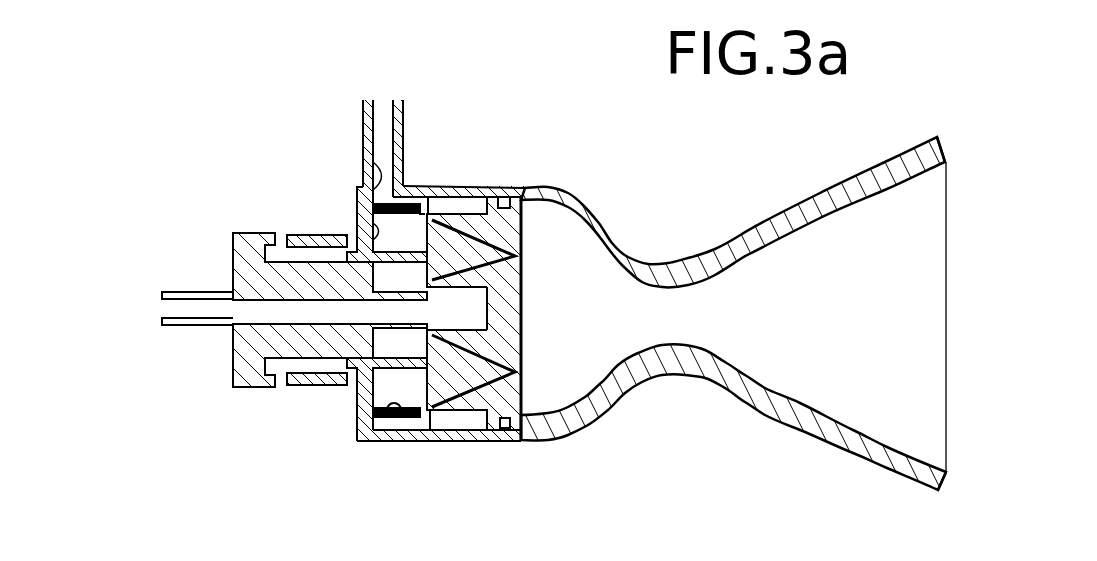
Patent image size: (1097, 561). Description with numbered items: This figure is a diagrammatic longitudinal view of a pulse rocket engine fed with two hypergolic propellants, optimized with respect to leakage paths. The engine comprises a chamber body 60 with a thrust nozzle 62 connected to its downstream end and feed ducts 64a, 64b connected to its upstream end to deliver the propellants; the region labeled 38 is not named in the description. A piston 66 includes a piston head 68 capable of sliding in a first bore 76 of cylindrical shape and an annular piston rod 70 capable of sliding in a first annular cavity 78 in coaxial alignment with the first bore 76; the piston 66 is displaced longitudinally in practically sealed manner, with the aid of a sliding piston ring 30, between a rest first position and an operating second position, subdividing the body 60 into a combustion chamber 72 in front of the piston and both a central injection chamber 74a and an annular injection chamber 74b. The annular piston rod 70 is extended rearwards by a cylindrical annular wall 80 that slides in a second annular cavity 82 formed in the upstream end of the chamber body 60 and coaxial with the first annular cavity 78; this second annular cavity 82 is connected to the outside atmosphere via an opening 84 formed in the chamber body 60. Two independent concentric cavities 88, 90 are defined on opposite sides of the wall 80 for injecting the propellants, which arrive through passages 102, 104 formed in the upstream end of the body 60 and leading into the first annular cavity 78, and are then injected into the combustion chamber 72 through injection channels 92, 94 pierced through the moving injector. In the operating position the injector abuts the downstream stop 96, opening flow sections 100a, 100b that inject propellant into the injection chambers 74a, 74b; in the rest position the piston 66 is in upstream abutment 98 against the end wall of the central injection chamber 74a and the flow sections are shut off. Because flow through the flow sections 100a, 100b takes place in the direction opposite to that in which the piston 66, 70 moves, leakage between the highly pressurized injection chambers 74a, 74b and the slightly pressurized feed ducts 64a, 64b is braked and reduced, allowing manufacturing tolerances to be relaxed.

The sliding piston ring 30 is at (505, 430).
The combustion chamber 38 is at (587, 265).
The chamber body 60 is at (600, 220).
The thrust nozzle 62 is at (843, 197).
The feed duct 64a is at (392, 121).
The feed duct 64b is at (165, 292).
The piston 66 is at (508, 285).
The piston head 68 is at (426, 270).
The annular piston rod 70 is at (443, 368).
The combustion chamber 72 is at (590, 372).
The central injection chamber 74a is at (390, 282).
The annular injection chamber 74b is at (354, 192).
The first bore 76 is at (467, 430).
The first annular cavity 78 is at (422, 212).
The cylindrical annular wall 80 is at (272, 387).
The second annular cavity 82 is at (293, 360).
The opening 84 is at (280, 240).
The concentric cavity 88 is at (506, 299).
The concentric cavity 90 is at (381, 412).
The injection channel 92 is at (537, 187).
The injection channel 94 is at (473, 350).
The downstream stop 96 is at (560, 442).
The upstream abutment 98 is at (397, 237).
The flow section 100a is at (366, 396).
The flow section 100b is at (430, 207).
The passage 102 is at (366, 152).
The passage 104 is at (188, 326).